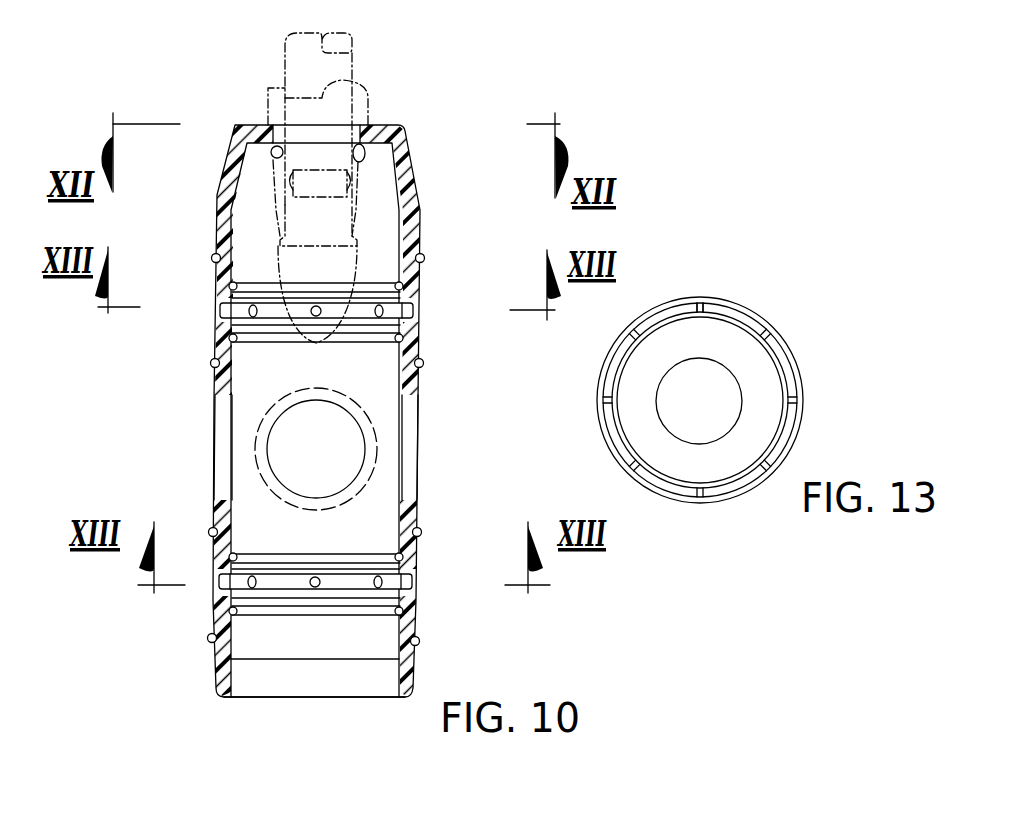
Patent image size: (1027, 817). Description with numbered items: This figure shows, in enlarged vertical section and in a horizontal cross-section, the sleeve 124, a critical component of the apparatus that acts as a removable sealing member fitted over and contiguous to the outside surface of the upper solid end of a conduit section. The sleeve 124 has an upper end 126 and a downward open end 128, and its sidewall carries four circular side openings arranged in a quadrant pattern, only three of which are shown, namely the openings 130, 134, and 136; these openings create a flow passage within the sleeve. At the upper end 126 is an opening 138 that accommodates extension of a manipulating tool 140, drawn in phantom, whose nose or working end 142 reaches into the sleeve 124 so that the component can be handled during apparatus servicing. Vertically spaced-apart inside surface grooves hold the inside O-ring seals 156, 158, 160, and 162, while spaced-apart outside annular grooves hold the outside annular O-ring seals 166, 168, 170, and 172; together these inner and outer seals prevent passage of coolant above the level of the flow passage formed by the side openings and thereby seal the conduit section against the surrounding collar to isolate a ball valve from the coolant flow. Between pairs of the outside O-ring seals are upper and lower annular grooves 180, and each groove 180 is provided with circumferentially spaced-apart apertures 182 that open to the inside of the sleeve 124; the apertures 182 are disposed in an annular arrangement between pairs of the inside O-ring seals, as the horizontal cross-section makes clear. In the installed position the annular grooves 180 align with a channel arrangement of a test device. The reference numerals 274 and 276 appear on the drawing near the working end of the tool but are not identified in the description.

In FIG. 10, the sleeve 124 is at (324, 398).
In FIG. 10, the upper end 126 is at (216, 218).
In FIG. 13, the upper end 126 is at (597, 376).
In FIG. 10, the downward open end 128 is at (222, 686).
In FIG. 10, the side opening 130 is at (316, 449).
In FIG. 10, the side opening 134 is at (418, 478).
In FIG. 10, the side opening 136 is at (214, 492).
In FIG. 10, the opening 138 is at (357, 140).
In FIG. 13, the opening 138 is at (736, 373).
In FIG. 10, the manipulating tool 140 is at (279, 72).
In FIG. 10, the nose or working end 142 is at (318, 343).
In FIG. 10, the O-ring seal 156 is at (377, 283).
In FIG. 10, the O-ring seal 158 is at (386, 334).
In FIG. 10, the O-ring seal 160 is at (338, 553).
In FIG. 10, the O-ring seal 162 is at (287, 606).
In FIG. 10, the annular O-ring seal 166 is at (424, 260).
In FIG. 10, the annular O-ring seal 168 is at (423, 366).
In FIG. 10, the annular O-ring seal 170 is at (421, 532).
In FIG. 10, the annular O-ring seal 172 is at (420, 641).
In FIG. 10, the annular groove 180 is at (220, 311).
In FIG. 13, the annular groove 180 is at (802, 378).
In FIG. 10, the aperture 182 is at (313, 590).
In FIG. 13, the aperture 182 is at (774, 330).
In FIG. 10, the hook 274 is at (283, 158).
In FIG. 10, the inner element 276 is at (318, 197).